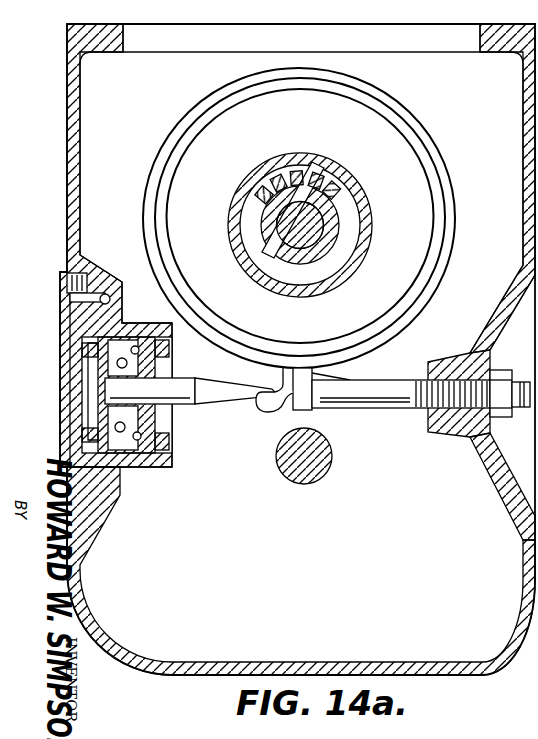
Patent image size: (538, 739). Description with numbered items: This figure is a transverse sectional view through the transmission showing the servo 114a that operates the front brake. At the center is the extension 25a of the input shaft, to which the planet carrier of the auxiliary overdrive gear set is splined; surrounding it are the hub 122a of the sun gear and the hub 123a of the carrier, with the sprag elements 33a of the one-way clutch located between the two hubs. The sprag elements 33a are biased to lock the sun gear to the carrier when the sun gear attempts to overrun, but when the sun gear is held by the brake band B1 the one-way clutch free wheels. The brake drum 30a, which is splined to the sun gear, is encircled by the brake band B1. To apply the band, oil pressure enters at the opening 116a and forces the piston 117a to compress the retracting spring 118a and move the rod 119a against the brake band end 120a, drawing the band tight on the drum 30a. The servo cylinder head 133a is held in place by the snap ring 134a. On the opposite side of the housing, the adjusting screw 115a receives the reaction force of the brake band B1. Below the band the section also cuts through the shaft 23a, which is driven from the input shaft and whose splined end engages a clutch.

The brake band B1 is at (413, 110).
The brake drum 30a is at (425, 143).
The hub of carrier 123a is at (334, 172).
The one-way clutch sprag elements 33a is at (343, 196).
The extension 25a is at (323, 236).
The hub of sun gear 122a is at (323, 257).
The opening 116a is at (68, 297).
The piston 117a is at (84, 352).
The snap ring 134a is at (170, 346).
The rod 119a is at (203, 406).
The brake band end 120a is at (261, 412).
The servo cylinder head 133a is at (172, 442).
The retracting spring 118a is at (131, 468).
The servo 114a is at (175, 468).
The adjusting screw 115a is at (416, 408).
The shaft 23a is at (330, 470).